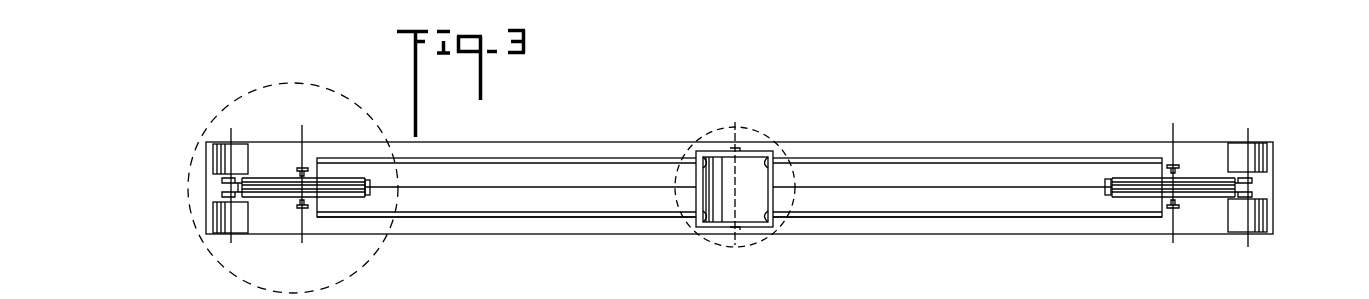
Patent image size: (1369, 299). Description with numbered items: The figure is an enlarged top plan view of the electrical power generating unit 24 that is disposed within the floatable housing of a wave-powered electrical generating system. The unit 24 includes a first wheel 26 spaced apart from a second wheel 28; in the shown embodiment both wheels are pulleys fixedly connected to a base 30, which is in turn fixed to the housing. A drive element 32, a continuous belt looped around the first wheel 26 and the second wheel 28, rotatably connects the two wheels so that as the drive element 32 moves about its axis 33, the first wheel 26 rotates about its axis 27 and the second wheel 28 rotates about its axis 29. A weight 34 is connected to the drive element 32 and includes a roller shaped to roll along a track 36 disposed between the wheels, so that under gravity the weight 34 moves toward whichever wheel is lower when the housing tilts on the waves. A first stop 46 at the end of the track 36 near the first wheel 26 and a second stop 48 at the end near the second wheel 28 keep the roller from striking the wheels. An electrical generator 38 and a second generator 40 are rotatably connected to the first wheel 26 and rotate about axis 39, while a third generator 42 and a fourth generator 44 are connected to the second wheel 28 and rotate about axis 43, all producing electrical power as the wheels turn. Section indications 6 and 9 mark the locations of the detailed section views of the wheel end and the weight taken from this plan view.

The section line 6- 6 is at (323, 297).
The section line 9- 9 is at (721, 254).
The electrical power generating unit 24 is at (1208, 110).
The first wheel 26 is at (290, 180).
The axis 27 is at (302, 156).
The second wheel 28 is at (1158, 178).
The axis 29 is at (1173, 150).
The base 30 is at (560, 157).
The drive element 32 is at (867, 187).
The axis 33 is at (737, 178).
The weight 34 is at (728, 187).
The track 36 is at (530, 217).
The electrical generator 38 is at (238, 220).
The axis 39 is at (230, 143).
The second generator 40 is at (238, 158).
The third generator 42 is at (1243, 217).
The axis 43 is at (1248, 135).
The fourth generator 44 is at (1236, 155).
The first stop 46 is at (370, 193).
The second stop 48 is at (1107, 198).